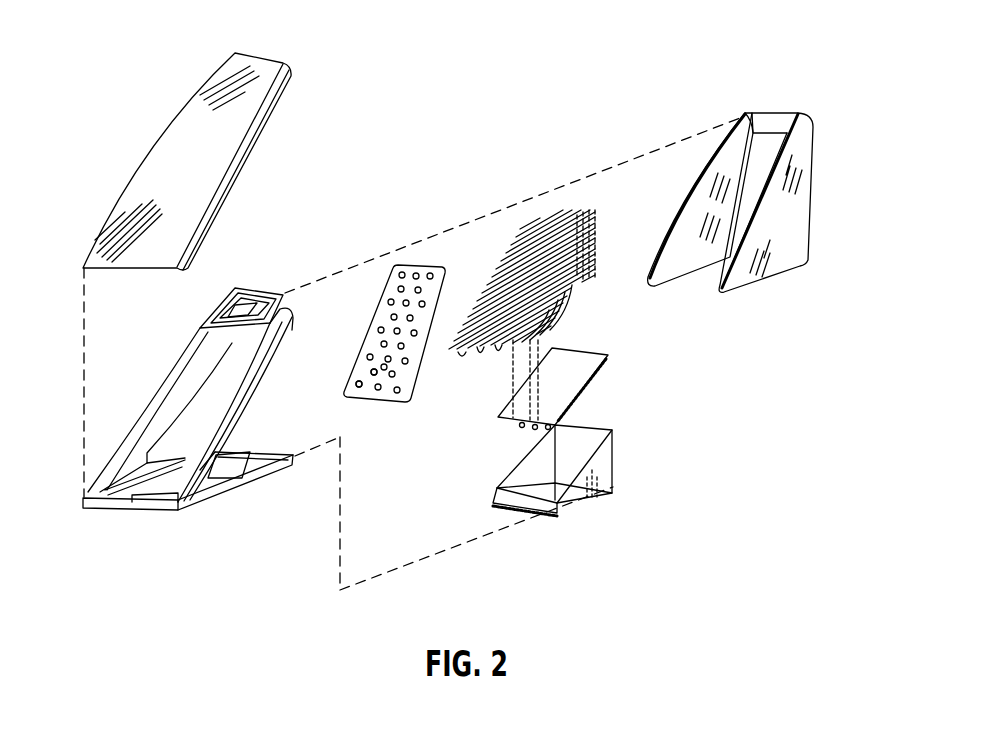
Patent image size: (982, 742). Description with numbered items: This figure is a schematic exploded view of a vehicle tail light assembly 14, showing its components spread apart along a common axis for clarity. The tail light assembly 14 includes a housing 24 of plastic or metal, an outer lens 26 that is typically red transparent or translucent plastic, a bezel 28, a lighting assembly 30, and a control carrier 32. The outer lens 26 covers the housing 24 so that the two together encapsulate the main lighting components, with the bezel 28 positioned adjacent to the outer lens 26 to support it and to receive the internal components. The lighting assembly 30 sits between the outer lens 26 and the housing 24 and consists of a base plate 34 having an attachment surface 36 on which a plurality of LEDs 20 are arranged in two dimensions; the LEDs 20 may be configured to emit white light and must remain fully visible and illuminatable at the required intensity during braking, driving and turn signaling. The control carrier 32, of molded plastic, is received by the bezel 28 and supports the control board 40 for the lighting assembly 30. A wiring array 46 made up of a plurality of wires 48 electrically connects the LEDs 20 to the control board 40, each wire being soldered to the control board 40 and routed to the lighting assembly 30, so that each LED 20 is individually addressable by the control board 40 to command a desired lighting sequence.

The tail light assembly 14 is at (669, 33).
The LEDs 20 is at (384, 371).
The housing 24 is at (796, 238).
The outer lens 26 is at (197, 166).
The bezel 28 is at (105, 512).
The lighting assembly 30 is at (368, 288).
The control carrier 32 is at (568, 497).
The base plate 34 is at (416, 264).
The attachment surface 36 is at (367, 326).
The control board 40 is at (581, 381).
The wiring array 46 is at (600, 307).
The wires 48 is at (498, 347).